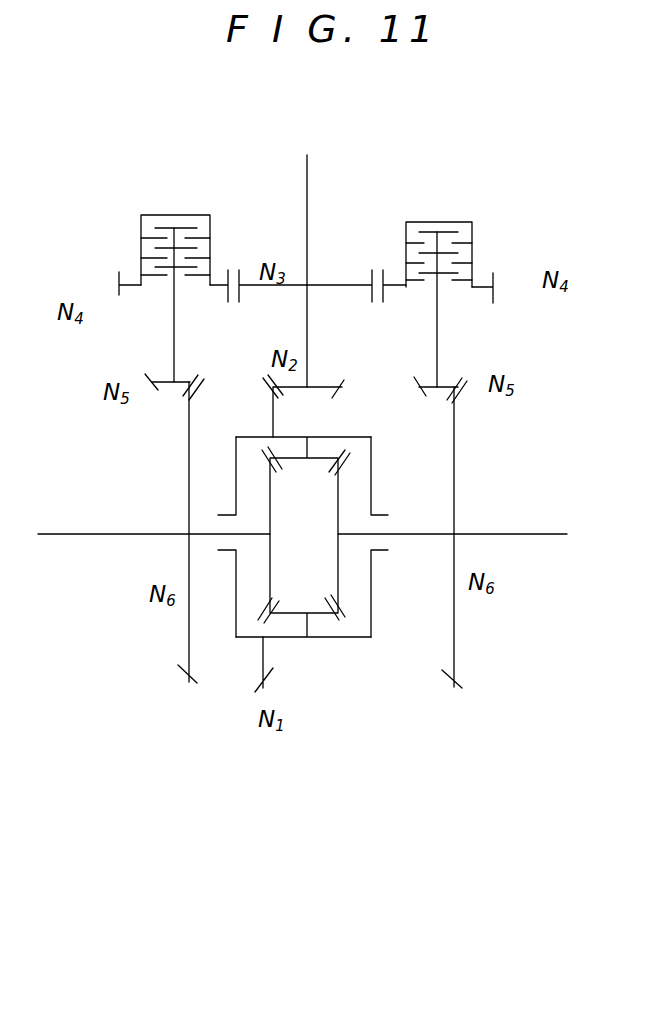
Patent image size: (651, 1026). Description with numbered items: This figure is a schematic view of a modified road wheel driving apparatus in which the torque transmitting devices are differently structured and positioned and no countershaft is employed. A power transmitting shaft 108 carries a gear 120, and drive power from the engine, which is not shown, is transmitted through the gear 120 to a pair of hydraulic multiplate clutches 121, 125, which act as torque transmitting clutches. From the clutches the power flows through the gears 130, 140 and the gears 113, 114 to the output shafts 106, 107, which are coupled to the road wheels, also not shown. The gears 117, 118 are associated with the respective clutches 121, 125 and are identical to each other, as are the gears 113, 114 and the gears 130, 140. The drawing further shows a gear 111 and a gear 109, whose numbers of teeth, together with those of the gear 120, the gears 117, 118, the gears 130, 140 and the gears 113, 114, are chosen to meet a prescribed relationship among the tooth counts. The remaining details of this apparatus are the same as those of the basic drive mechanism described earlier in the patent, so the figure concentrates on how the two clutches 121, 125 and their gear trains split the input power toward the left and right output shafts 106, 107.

The output shaft 106 is at (74, 535).
The output shaft 107 is at (533, 533).
The power transmitting shaft 108 is at (308, 192).
The gear 109 is at (318, 386).
The gear 111 is at (263, 658).
The gear 113 is at (189, 633).
The gear 114 is at (454, 628).
The gear 117 is at (118, 284).
The gear 118 is at (493, 292).
The gear 120 is at (248, 287).
The hydraulic multiplate clutch 121 is at (122, 203).
The hydraulic multiplate clutch 125 is at (490, 216).
The gear 130 is at (166, 380).
The gear 140 is at (443, 384).